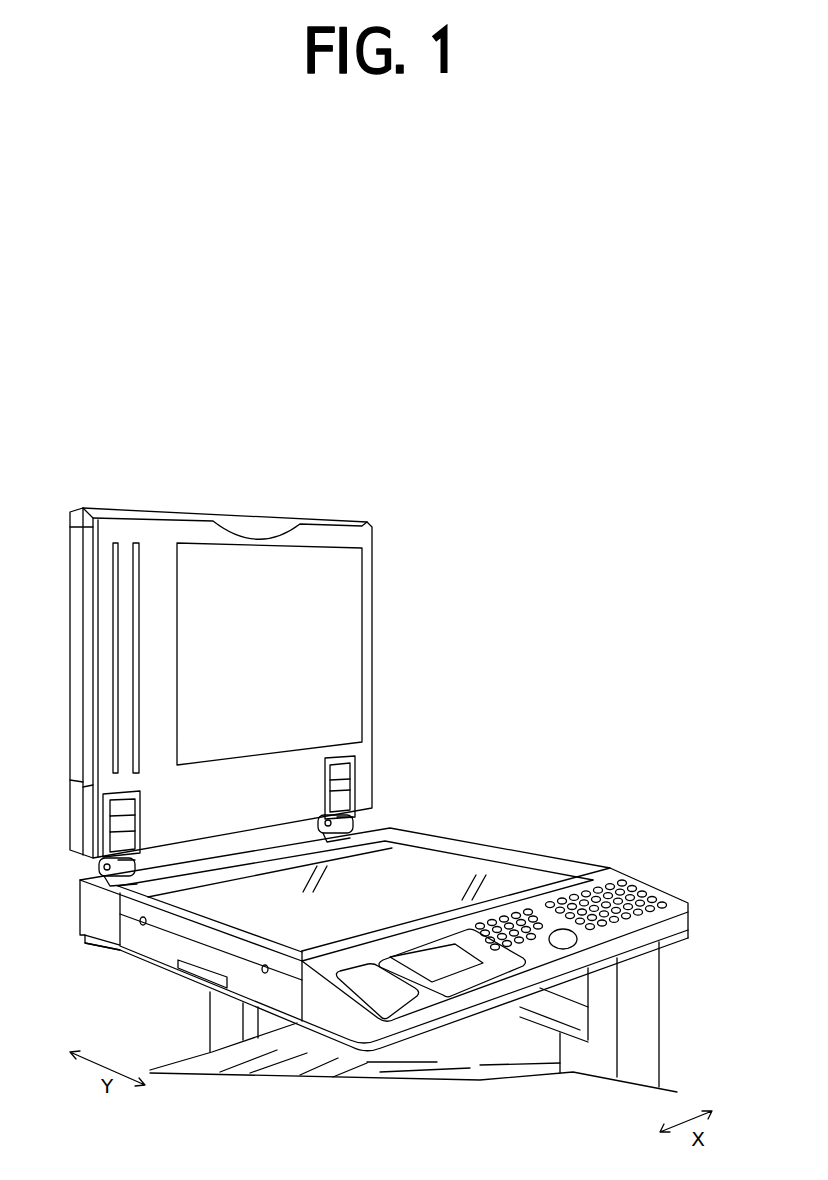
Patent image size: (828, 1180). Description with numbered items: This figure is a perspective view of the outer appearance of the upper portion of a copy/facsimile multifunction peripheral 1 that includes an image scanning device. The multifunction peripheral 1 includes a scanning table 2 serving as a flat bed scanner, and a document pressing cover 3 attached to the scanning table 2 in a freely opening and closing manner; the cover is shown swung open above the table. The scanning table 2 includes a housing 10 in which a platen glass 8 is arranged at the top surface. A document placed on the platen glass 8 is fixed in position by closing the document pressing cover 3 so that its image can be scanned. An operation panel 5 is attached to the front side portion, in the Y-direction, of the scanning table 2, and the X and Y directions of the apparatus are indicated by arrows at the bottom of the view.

The copy/facsimile multifunction peripheral 1 is at (506, 535).
The scanning table 2 is at (537, 836).
The document pressing cover 3 is at (246, 487).
The operation panel 5 is at (668, 878).
The platen glass 8 is at (387, 878).
The housing 10 is at (472, 832).